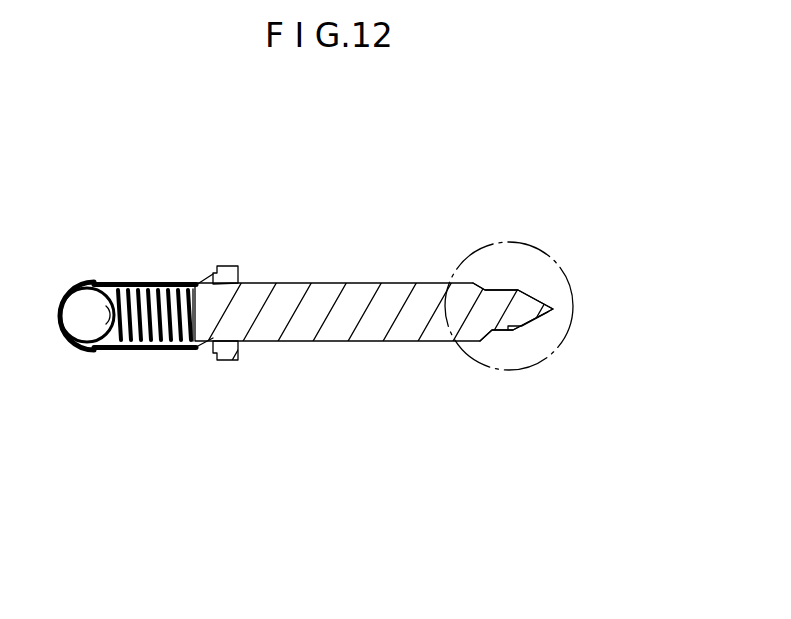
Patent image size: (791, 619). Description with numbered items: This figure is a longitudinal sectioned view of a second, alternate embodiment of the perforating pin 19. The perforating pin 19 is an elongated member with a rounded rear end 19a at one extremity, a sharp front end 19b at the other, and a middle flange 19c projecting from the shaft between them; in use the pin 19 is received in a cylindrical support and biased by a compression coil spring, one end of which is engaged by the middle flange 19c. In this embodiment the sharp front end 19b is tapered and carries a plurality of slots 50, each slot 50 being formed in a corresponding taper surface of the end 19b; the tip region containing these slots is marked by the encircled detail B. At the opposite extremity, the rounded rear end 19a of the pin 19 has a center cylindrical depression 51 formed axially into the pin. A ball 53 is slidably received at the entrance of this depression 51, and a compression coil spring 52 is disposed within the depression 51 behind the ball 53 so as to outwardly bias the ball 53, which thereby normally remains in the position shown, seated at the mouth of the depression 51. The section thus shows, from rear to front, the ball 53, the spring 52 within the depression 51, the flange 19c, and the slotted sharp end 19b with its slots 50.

The perforating pin 19 is at (365, 278).
The rounded rear end 19a is at (182, 347).
The sharp front end 19b is at (500, 315).
The middle flange 19c is at (233, 275).
The slots 50 is at (513, 290).
The center cylindrical depression 51 is at (137, 343).
The compression coil spring 52 is at (172, 249).
The ball 53 is at (83, 328).
The detail region B is at (572, 325).